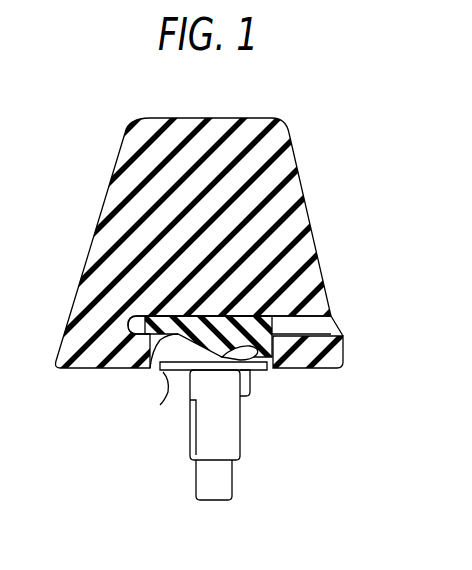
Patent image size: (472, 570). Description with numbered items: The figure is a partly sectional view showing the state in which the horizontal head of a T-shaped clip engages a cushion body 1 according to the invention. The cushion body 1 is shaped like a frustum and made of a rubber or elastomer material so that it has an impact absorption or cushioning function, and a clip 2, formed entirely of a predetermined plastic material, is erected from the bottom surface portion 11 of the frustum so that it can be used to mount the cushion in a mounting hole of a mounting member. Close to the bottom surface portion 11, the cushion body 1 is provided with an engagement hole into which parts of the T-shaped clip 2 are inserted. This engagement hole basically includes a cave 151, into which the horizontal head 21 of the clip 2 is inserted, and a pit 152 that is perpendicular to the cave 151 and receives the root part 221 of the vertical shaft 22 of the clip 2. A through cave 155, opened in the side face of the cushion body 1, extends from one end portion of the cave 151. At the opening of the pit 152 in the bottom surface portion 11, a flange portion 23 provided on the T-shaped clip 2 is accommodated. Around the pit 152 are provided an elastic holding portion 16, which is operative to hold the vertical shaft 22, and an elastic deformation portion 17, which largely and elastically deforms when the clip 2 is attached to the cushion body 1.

The cushion body 1 is at (236, 276).
The bottom surface portion 11 is at (86, 370).
The horizontal head 21 is at (127, 325).
The cave 151 is at (318, 320).
The through cave 155 is at (338, 334).
The elastic deformation portion 17 is at (305, 349).
The elastic holding portion 16 is at (158, 362).
The flange portion 23 is at (163, 372).
The pit 152 is at (236, 375).
The root part 221 is at (192, 394).
The clip 2 is at (205, 421).
The vertical shaft 22 is at (228, 480).